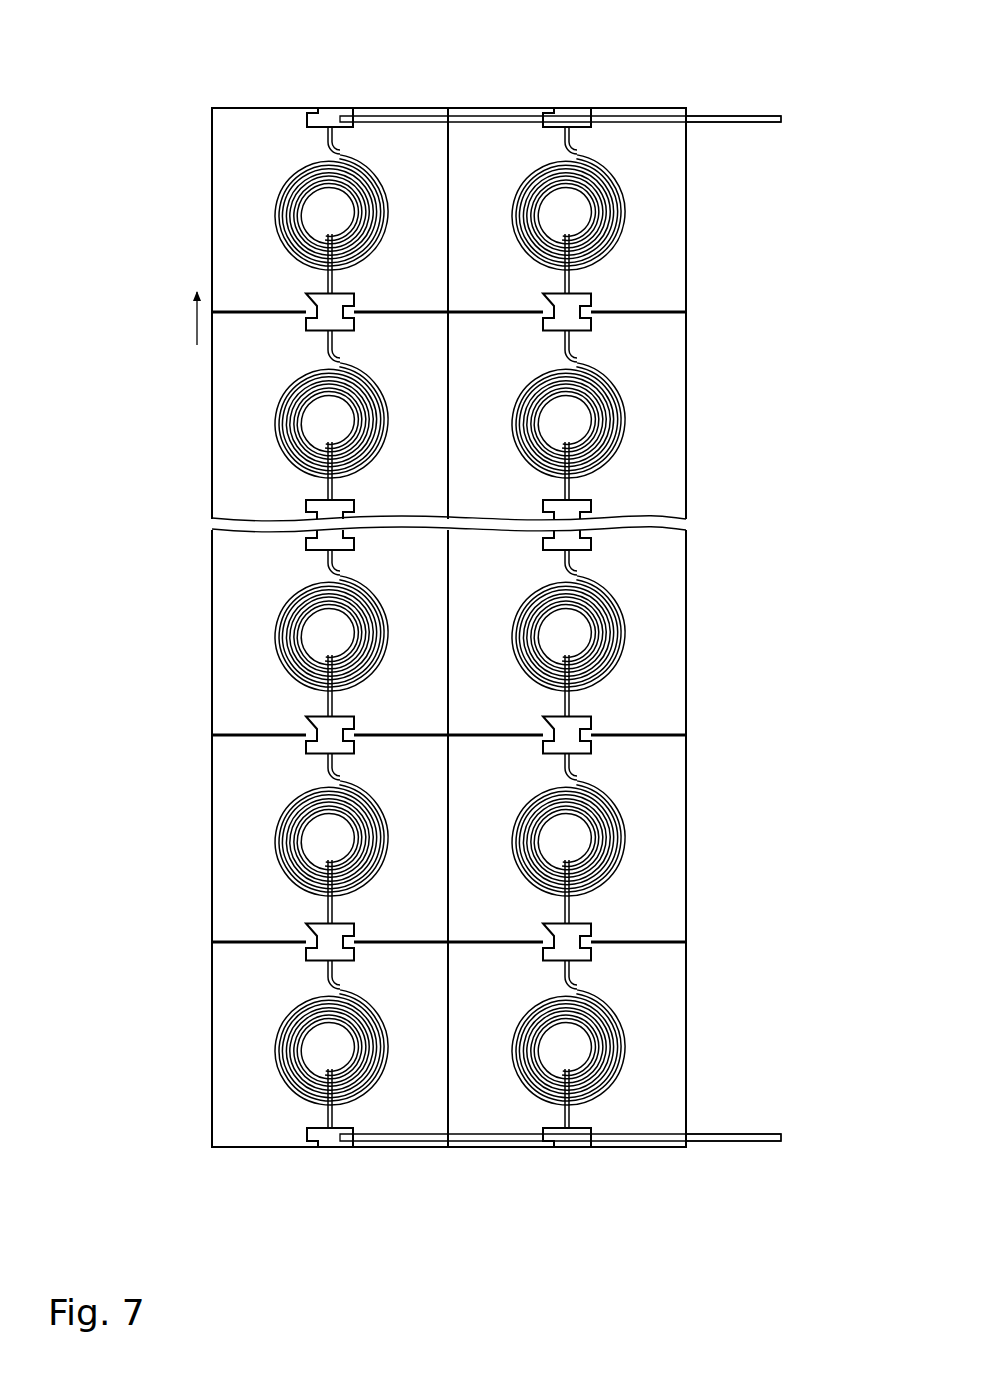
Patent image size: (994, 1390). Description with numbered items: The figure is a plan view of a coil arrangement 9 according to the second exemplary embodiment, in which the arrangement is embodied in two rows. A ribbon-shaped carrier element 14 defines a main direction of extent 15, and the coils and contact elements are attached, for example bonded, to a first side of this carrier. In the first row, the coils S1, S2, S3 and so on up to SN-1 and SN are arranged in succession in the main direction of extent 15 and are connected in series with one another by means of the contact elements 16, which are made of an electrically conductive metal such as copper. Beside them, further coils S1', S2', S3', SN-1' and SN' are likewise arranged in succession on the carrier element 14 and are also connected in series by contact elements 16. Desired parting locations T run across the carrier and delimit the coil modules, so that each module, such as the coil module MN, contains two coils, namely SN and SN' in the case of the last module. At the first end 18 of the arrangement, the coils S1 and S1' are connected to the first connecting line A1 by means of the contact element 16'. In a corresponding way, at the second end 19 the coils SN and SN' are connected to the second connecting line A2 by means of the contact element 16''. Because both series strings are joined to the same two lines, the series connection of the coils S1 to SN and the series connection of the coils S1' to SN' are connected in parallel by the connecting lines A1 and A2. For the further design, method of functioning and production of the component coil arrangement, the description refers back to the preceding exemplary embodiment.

The coil arrangement 9 is at (176, 545).
The carrier element 14 is at (230, 692).
The main direction of extent 15 is at (196, 314).
The contact element 16 is at (443, 627).
The contact element 16' is at (437, 1190).
The contact element 16'' is at (437, 64).
The first end 18 is at (436, 1148).
The second end 19 is at (436, 107).
The first connecting line A1 is at (753, 1142).
The second connecting line A2 is at (753, 113).
The coil module MN is at (690, 160).
The desired parting location T is at (641, 311).
The coil SN' is at (244, 210).
The coil SN is at (647, 210).
The coil SN-1' is at (244, 416).
The coil SN-1 is at (658, 416).
The coil S3' is at (244, 633).
The coil S3 is at (646, 633).
The coil S2' is at (244, 839).
The coil S2 is at (647, 839).
The coil S1' is at (244, 1045).
The coil S1 is at (646, 1045).